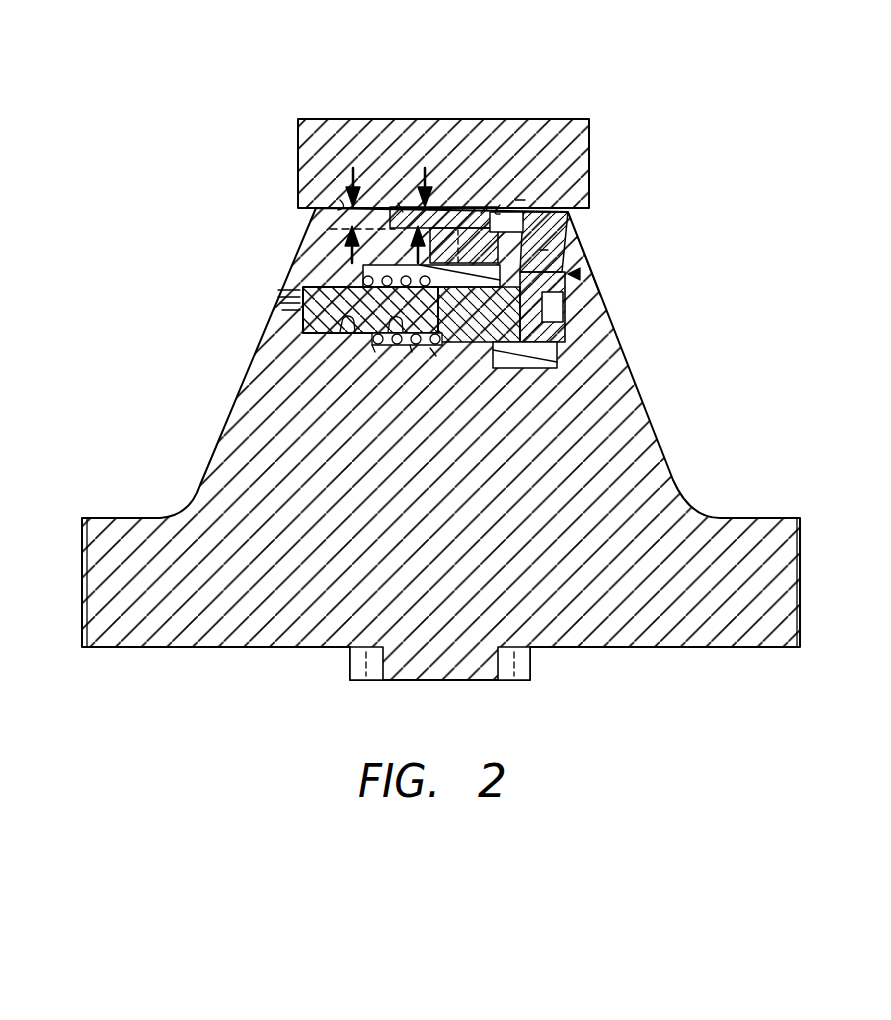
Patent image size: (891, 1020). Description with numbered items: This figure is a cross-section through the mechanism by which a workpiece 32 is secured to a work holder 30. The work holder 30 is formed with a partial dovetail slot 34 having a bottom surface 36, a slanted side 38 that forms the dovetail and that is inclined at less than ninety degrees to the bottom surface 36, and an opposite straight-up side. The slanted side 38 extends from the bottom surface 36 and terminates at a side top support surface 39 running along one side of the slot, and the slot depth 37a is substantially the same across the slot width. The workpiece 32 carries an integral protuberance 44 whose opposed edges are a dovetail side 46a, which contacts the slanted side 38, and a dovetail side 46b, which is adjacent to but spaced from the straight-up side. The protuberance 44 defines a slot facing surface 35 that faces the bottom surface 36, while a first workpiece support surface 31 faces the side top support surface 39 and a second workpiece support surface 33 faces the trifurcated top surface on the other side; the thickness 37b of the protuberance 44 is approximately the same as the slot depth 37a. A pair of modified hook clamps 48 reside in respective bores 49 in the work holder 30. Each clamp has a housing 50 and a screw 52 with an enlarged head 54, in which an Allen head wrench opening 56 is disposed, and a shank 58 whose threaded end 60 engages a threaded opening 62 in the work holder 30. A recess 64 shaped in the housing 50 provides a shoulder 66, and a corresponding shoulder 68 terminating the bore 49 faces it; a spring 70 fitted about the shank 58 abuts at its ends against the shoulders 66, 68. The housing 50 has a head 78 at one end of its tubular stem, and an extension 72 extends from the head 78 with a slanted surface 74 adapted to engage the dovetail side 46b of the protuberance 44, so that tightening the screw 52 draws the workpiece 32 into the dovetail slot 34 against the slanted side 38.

The work holder 30 is at (190, 490).
The first workpiece support surface 31 is at (318, 207).
The workpiece 32 is at (298, 186).
The second workpiece support surface 33 is at (705, 182).
The partial dovetail slot 34 is at (446, 222).
The slot facing surface 35 is at (362, 270).
The bottom surface 36 is at (469, 240).
The slot depth 37a is at (350, 168).
The thickness of the protuberance 37b is at (425, 168).
The slanted side 38 is at (400, 207).
The side top support surface 39 is at (343, 205).
The protuberance 44 is at (485, 208).
The dovetail side 46a is at (348, 247).
The dovetail side 46b is at (535, 230).
The clamp 48 is at (555, 262).
The bore 49 is at (578, 274).
The housing 50 is at (550, 358).
The screw 52 is at (302, 318).
The enlarged head 54 is at (560, 335).
The Allen head wrench opening 56 is at (585, 298).
The shank 58 is at (500, 328).
The threaded end 60 is at (342, 325).
The threaded opening 62 is at (392, 322).
The recess 64 is at (372, 345).
The shoulder 66 is at (430, 348).
The shoulder 68 is at (370, 355).
The spring 70 is at (410, 345).
The extension 72 is at (515, 200).
The slanted surface 74 is at (495, 205).
The head 78 is at (540, 250).